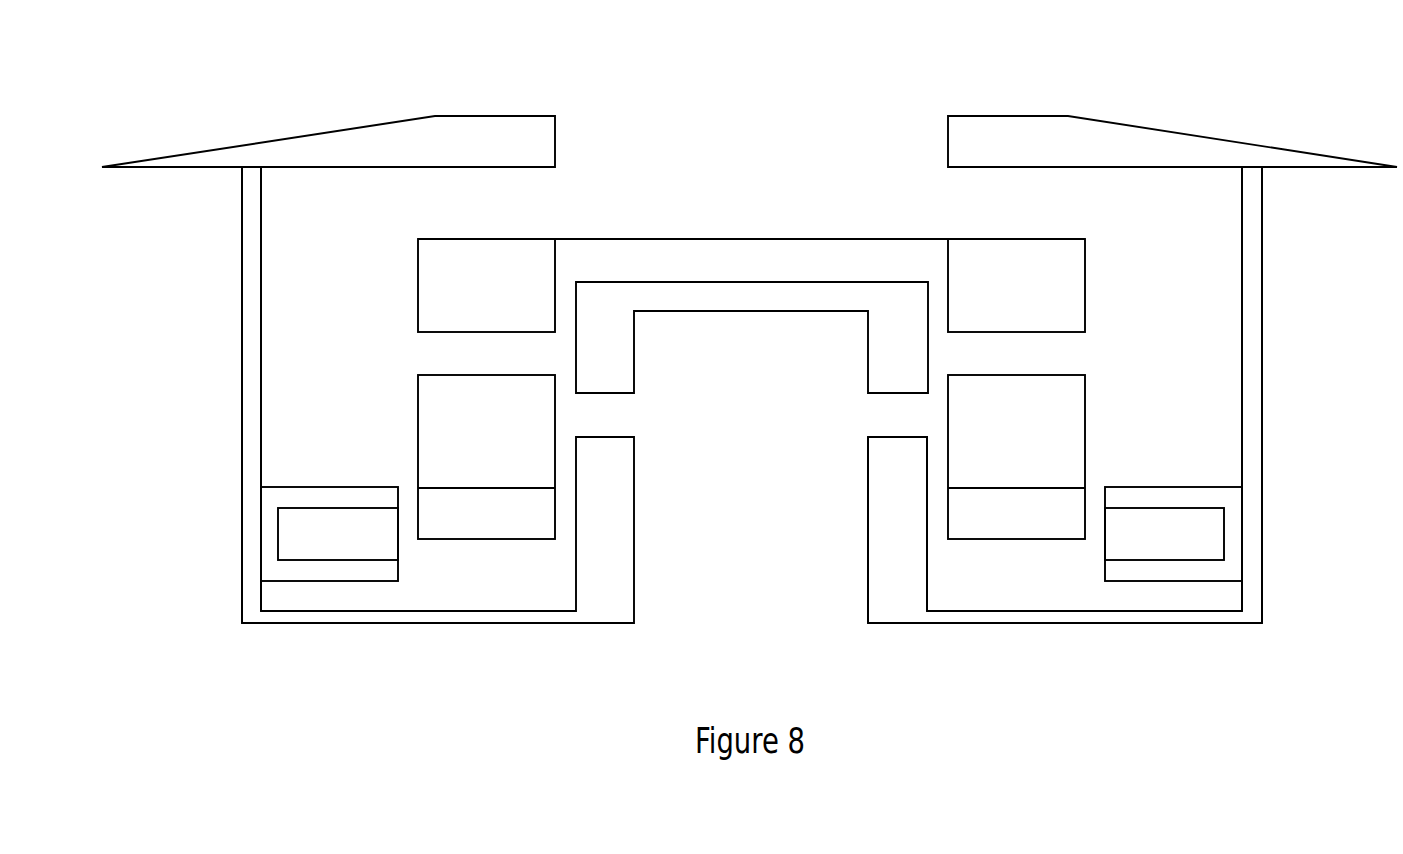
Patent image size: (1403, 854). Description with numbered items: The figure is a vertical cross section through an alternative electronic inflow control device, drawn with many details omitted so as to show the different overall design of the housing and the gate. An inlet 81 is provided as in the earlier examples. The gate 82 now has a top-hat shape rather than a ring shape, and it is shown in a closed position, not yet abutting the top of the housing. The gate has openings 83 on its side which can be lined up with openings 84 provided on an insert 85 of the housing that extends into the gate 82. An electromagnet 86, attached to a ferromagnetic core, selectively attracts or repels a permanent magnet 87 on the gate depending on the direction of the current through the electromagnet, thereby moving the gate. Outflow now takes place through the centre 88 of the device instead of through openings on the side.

The inlet 81 is at (680, 138).
The gate 82 is at (505, 273).
The openings 83 is at (428, 353).
The openings 84 is at (870, 418).
The insert 85 is at (883, 539).
The electromagnet 86 is at (1174, 538).
The permanent magnet 87 is at (1017, 540).
The centre 88 is at (655, 636).